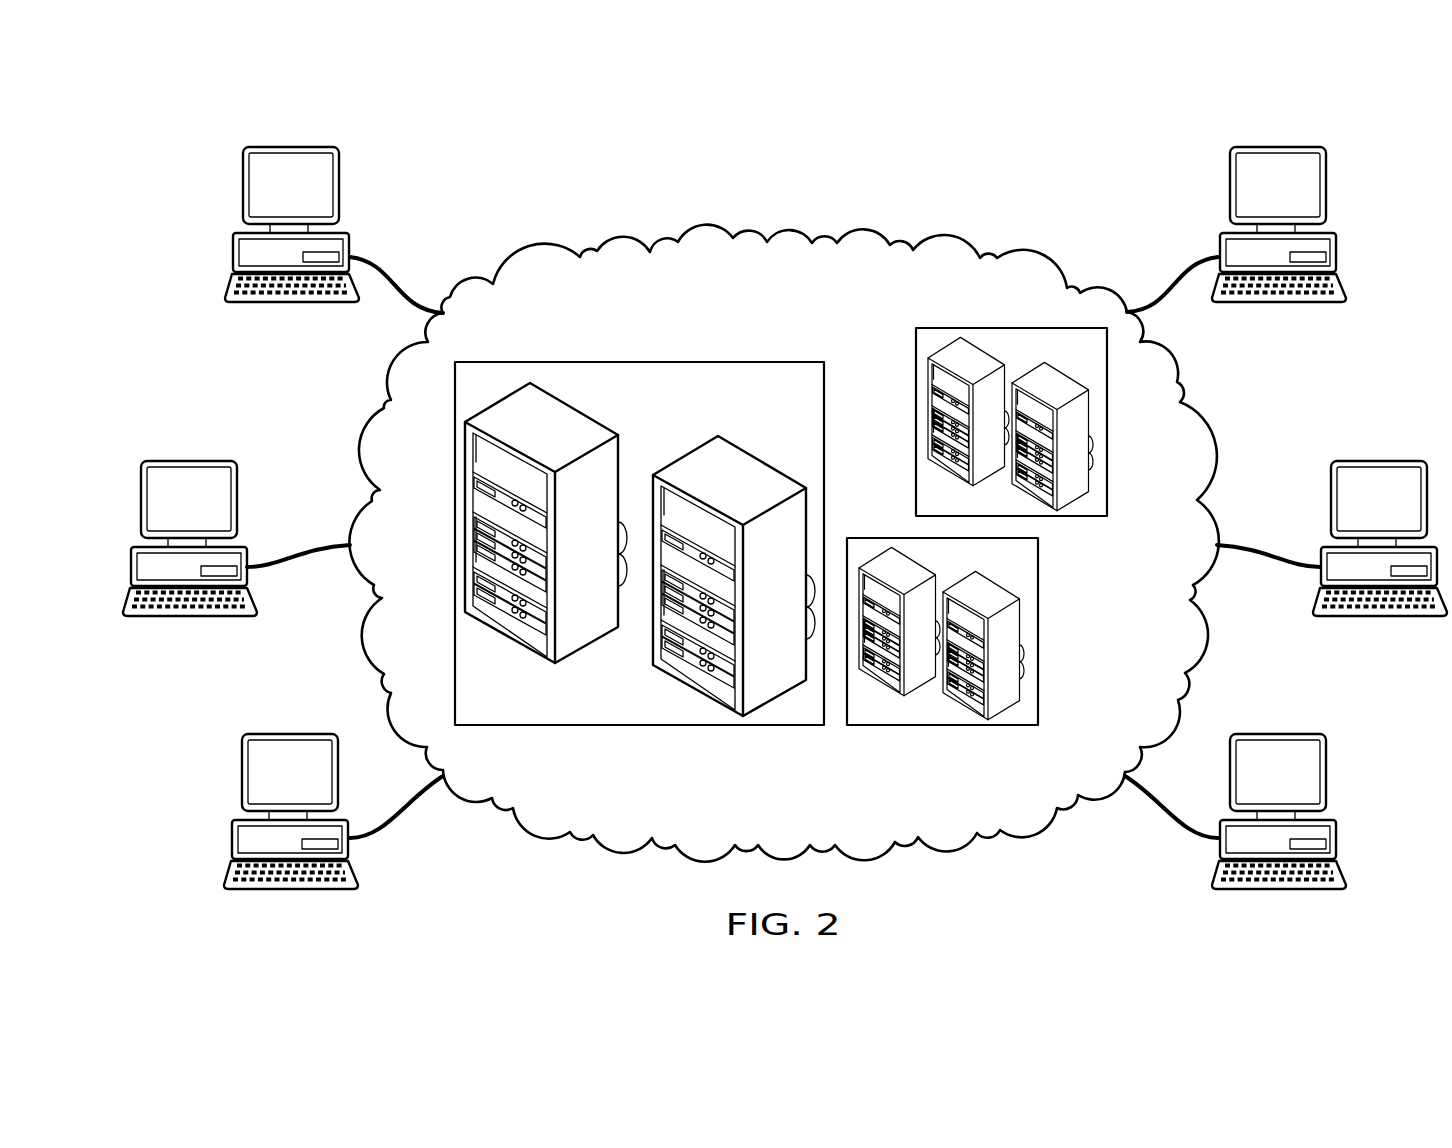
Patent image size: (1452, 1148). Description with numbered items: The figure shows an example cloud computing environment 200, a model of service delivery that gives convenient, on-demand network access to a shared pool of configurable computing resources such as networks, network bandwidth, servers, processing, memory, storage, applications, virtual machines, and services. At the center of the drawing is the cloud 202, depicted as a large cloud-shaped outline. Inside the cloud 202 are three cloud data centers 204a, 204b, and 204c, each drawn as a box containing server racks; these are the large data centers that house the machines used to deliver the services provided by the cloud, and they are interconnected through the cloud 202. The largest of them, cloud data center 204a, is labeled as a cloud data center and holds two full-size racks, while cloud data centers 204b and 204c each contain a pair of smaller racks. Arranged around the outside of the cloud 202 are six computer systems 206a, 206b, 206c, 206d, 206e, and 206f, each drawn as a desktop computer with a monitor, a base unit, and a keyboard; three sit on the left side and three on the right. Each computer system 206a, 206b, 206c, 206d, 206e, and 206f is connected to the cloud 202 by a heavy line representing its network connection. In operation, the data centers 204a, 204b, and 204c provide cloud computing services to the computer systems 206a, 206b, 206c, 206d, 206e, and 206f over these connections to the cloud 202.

The cloud computing environment 200 is at (536, 139).
The cloud 202 is at (871, 226).
The cloud data center 204a is at (640, 362).
The cloud data center 204b is at (1080, 517).
The cloud data center 204c is at (940, 726).
The computer system 206a is at (289, 145).
The computer system 206b is at (190, 458).
The computer system 206c is at (232, 852).
The computer system 206d is at (1340, 852).
The computer system 206e is at (1377, 458).
The computer system 206f is at (1279, 145).